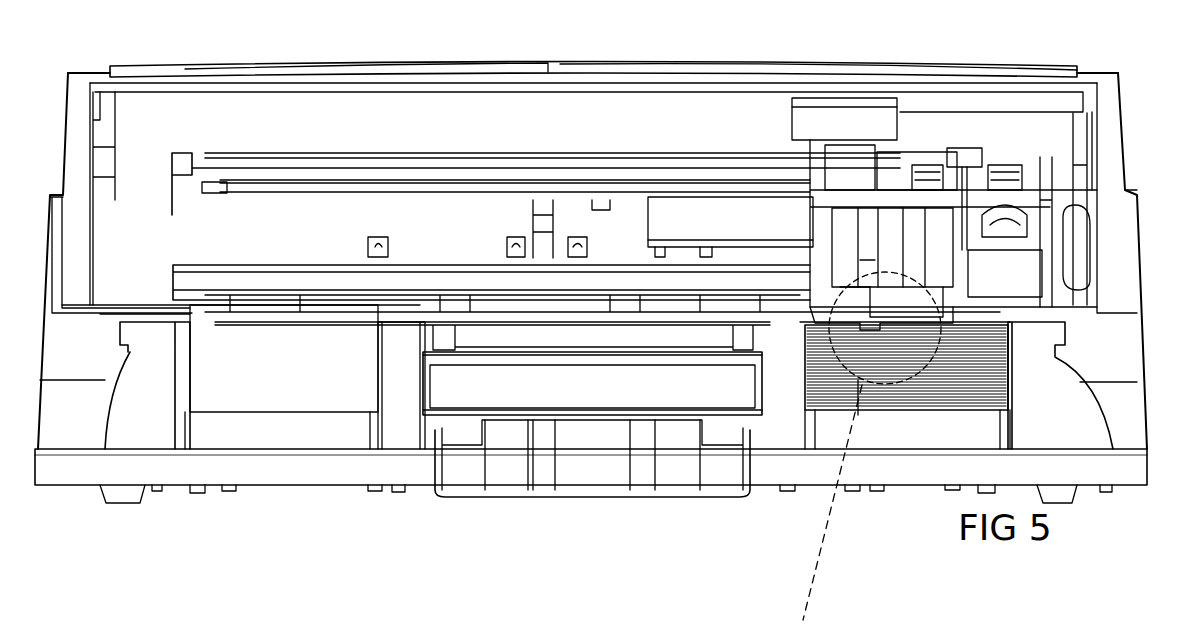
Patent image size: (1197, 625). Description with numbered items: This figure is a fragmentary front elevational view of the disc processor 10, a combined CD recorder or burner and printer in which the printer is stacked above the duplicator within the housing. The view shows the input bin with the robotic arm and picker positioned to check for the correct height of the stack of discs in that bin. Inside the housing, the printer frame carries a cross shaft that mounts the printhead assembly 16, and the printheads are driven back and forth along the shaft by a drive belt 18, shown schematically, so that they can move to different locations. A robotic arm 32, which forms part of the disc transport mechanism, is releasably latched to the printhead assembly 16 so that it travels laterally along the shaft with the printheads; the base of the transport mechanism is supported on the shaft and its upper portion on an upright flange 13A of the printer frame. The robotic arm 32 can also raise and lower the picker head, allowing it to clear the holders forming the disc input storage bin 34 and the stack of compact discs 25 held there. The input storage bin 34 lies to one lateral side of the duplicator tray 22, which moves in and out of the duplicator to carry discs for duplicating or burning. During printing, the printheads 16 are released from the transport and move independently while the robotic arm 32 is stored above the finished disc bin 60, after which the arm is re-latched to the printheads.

The disc processor 10 is at (163, 493).
The upright flange 13A is at (363, 157).
The printhead assembly 16 is at (928, 147).
The drive belt 18 is at (273, 265).
The duplicator tray 22 is at (633, 387).
The compact discs 25 is at (927, 407).
The robotic arm 32 is at (853, 240).
The disc input storage bin 34 is at (1033, 412).
The finished disc bin 60 is at (401, 427).